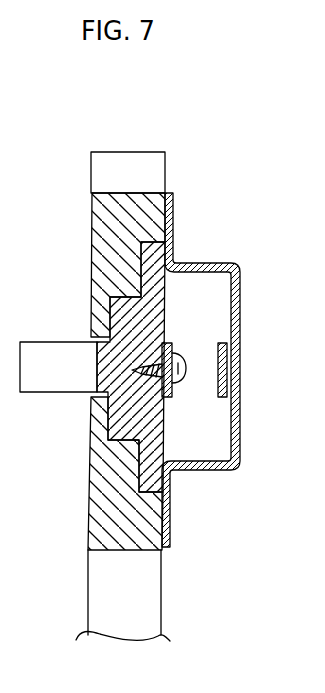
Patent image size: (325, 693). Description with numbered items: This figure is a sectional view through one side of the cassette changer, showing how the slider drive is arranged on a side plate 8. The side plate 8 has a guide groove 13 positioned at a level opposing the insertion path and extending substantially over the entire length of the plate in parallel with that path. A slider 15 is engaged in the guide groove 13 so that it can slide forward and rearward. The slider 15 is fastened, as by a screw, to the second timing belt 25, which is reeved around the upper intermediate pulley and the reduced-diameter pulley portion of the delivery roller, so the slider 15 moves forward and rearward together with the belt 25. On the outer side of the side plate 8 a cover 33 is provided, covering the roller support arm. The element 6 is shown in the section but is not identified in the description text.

The mounting flange 6 is at (48, 342).
The side plate 8 is at (100, 234).
The guide groove 13 is at (130, 440).
The slider 15 is at (160, 314).
The second timing belt 25 is at (228, 364).
The cover 33 is at (232, 264).